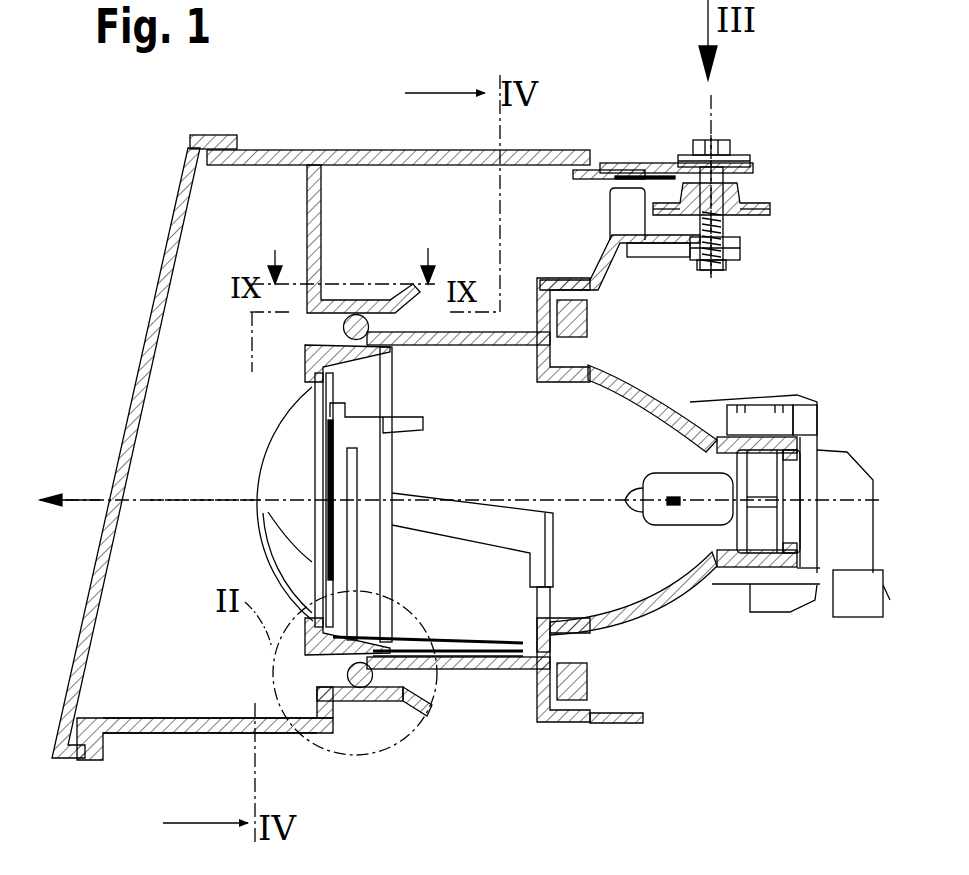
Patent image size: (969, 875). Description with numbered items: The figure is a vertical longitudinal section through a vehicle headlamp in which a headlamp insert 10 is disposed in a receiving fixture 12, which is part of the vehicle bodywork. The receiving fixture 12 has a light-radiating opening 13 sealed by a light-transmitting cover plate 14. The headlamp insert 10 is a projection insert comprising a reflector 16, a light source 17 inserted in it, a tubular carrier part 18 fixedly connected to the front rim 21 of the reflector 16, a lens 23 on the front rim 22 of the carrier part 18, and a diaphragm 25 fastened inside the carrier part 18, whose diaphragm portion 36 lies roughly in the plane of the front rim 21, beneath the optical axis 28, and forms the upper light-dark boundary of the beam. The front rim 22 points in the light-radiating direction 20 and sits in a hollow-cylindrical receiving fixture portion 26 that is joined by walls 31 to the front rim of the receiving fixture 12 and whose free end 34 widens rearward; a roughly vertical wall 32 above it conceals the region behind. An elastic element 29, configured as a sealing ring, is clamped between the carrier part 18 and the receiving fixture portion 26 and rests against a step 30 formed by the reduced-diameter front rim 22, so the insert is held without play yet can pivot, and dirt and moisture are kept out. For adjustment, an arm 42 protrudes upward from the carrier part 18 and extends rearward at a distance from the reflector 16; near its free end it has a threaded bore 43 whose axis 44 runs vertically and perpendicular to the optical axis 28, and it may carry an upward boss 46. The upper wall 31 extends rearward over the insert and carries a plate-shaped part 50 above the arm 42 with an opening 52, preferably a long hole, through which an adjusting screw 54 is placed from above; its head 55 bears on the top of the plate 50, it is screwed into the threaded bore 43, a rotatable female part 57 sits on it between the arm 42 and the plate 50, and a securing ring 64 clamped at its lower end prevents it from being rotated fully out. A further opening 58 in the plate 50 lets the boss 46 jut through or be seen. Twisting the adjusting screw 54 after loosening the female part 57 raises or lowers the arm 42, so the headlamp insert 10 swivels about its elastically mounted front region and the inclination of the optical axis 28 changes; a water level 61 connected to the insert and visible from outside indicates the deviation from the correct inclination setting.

The headlamp insert 10 is at (493, 684).
The receiving fixture 12 is at (162, 750).
The light-radiating opening 13 is at (100, 718).
The cover plate 14 is at (173, 217).
The reflector 16 is at (700, 398).
The light source 17 is at (680, 487).
The carrier part 18 is at (465, 662).
The light-radiating direction 20 is at (68, 500).
The front rim of the reflector 21 is at (575, 322).
The front rim of the carrier part 22 is at (330, 672).
The lens 23 is at (280, 468).
The diaphragm 25 is at (535, 615).
The receiving fixture portion 26 is at (385, 690).
The optical axis 28 is at (188, 505).
The elastic element 29 is at (350, 690).
The step 30 is at (415, 640).
The walls 31 is at (293, 150).
The wall 32 is at (312, 232).
The free end 34 is at (425, 705).
The diaphragm portion 36 is at (552, 530).
The arm 42 is at (660, 248).
The threaded bore 43 is at (703, 262).
The axis of the threaded bore 44 is at (718, 282).
The boss 46 is at (620, 213).
The plate-shaped part 50 is at (670, 165).
The opening 52 is at (722, 168).
The adjusting screw 54 is at (722, 205).
The head 55 is at (695, 143).
The female part 57 is at (768, 208).
The further opening 58 is at (605, 170).
The water level 61 is at (760, 425).
The securing ring 64 is at (742, 256).